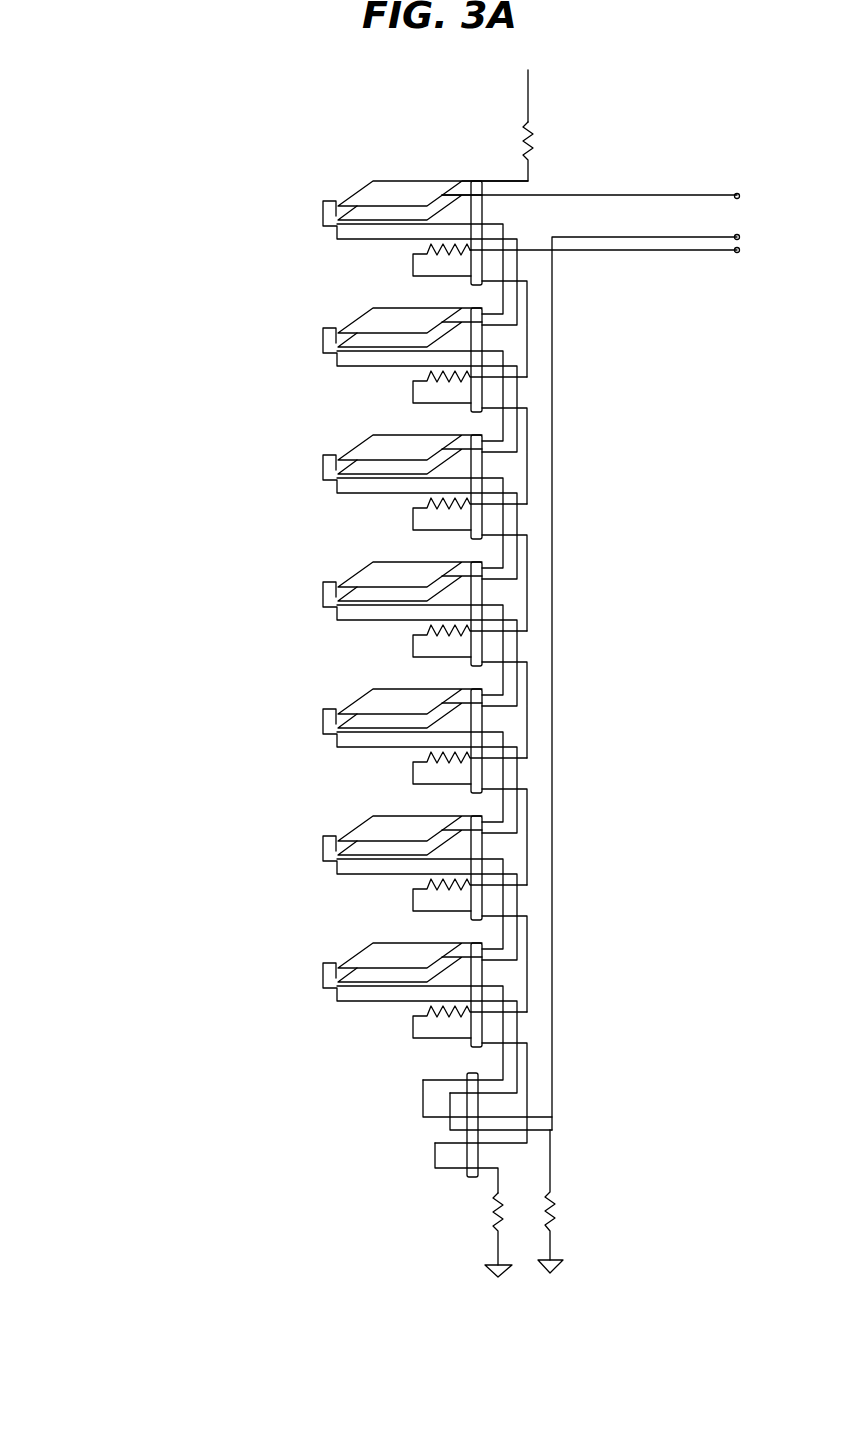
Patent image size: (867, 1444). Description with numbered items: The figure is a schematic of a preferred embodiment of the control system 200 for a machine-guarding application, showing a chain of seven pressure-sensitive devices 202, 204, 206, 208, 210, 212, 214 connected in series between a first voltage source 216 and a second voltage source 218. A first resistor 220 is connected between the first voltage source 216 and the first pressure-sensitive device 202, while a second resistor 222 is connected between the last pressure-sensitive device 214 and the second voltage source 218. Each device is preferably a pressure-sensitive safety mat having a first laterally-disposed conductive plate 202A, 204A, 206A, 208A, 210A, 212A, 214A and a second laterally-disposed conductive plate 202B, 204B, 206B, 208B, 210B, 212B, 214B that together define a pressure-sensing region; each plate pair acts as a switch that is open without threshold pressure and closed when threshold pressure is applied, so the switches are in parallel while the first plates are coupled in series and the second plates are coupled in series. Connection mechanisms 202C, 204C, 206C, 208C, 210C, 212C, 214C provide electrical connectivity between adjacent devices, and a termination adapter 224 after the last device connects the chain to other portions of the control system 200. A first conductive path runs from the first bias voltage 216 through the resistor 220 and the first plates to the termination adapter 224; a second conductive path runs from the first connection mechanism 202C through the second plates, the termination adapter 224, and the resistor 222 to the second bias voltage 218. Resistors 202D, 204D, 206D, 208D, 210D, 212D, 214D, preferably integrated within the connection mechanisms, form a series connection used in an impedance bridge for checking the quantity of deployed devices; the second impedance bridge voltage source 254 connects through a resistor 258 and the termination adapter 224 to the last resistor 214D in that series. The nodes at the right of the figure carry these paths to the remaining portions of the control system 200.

The control system 200 is at (142, 178).
The first pressure-sensitive device 202 is at (385, 289).
The first laterally-disposed conductive plate 202A is at (441, 181).
The second laterally-disposed conductive plate 202B is at (366, 218).
The connection mechanism 202C is at (485, 210).
The resistor 202D is at (413, 262).
The pressure-sensitive device 204 is at (383, 415).
The first laterally-disposed conductive plate 204A is at (437, 314).
The second laterally-disposed conductive plate 204B is at (360, 345).
The connection mechanism 204C is at (485, 340).
The resistor 204D is at (417, 395).
The pressure-sensitive device 206 is at (382, 542).
The first laterally-disposed conductive plate 206A is at (444, 442).
The second laterally-disposed conductive plate 206B is at (362, 472).
The connection mechanism 206C is at (485, 467).
The resistor 206D is at (420, 520).
The pressure-sensitive device 208 is at (383, 670).
The first laterally-disposed conductive plate 208A is at (434, 566).
The second laterally-disposed conductive plate 208B is at (355, 599).
The connection mechanism 208C is at (485, 594).
The resistor 208D is at (423, 645).
The pressure-sensitive device 210 is at (387, 797).
The first laterally-disposed conductive plate 210A is at (420, 698).
The second laterally-disposed conductive plate 210B is at (358, 726).
The connection mechanism 210C is at (485, 723).
The resistor 210D is at (420, 767).
The pressure-sensitive device 212 is at (388, 924).
The first laterally-disposed conductive plate 212A is at (437, 824).
The second laterally-disposed conductive plate 212B is at (355, 853).
The connection mechanism 212C is at (485, 850).
The resistor 212D is at (422, 897).
The pressure-sensitive device 214 is at (387, 1053).
The first laterally-disposed conductive plate 214A is at (437, 952).
The second laterally-disposed conductive plate 214B is at (355, 980).
The connection mechanism 214C is at (485, 975).
The resistor 214D is at (413, 1037).
The first voltage source 216 is at (545, 72).
The resistor R3 220 is at (533, 133).
The resistor R4 222 is at (557, 1227).
The termination adapter 224 is at (482, 1108).
The resistor 258 is at (493, 1217).
The second impedance bridge voltage source 254 is at (488, 1274).
The second voltage source 218 is at (547, 1273).